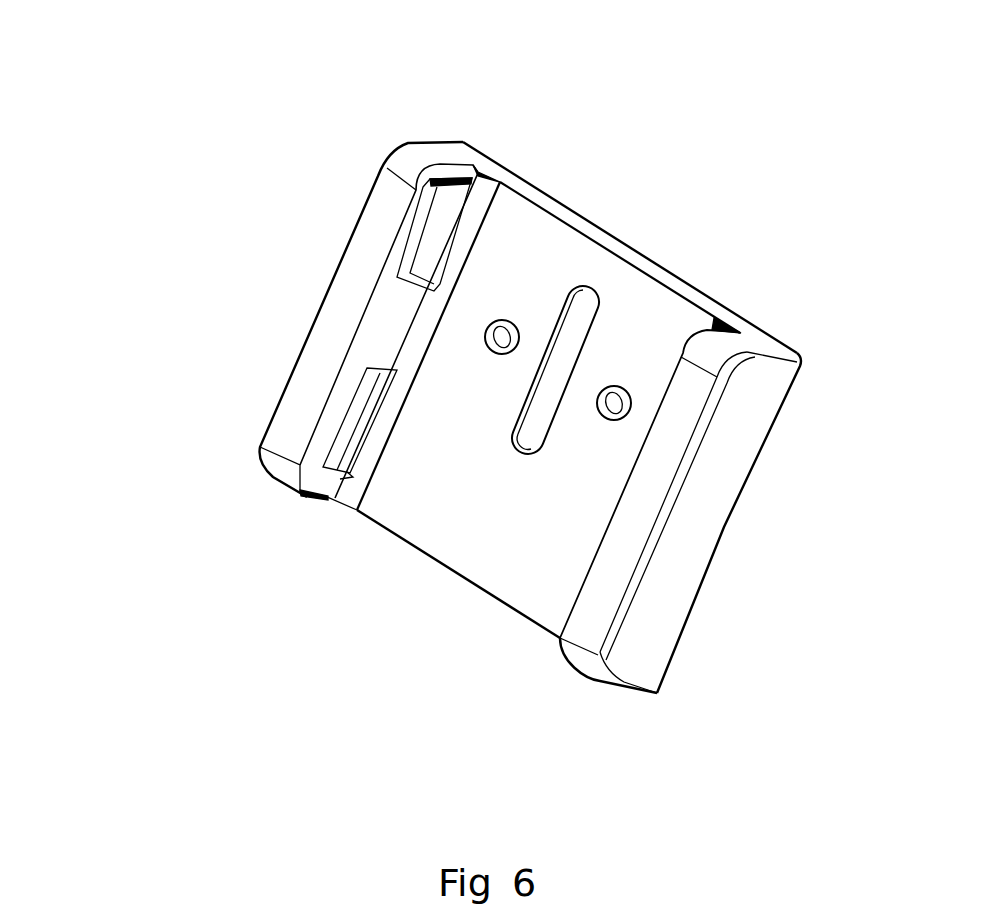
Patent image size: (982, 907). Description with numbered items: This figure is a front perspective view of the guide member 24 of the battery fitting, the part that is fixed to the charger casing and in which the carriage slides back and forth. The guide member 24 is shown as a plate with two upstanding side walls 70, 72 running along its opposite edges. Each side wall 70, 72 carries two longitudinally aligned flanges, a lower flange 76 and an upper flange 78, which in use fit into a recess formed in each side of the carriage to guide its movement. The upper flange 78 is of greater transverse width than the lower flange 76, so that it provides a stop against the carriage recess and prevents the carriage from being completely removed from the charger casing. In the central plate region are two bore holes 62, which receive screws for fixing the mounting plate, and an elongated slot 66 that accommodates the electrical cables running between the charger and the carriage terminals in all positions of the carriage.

The guide member 24 is at (244, 359).
The bore holes 62 is at (513, 312).
The elongated slot 66 is at (598, 308).
The side wall 70 is at (363, 272).
The side wall 72 is at (634, 526).
The lower flange 76 is at (312, 490).
The upper flange 78 is at (423, 218).